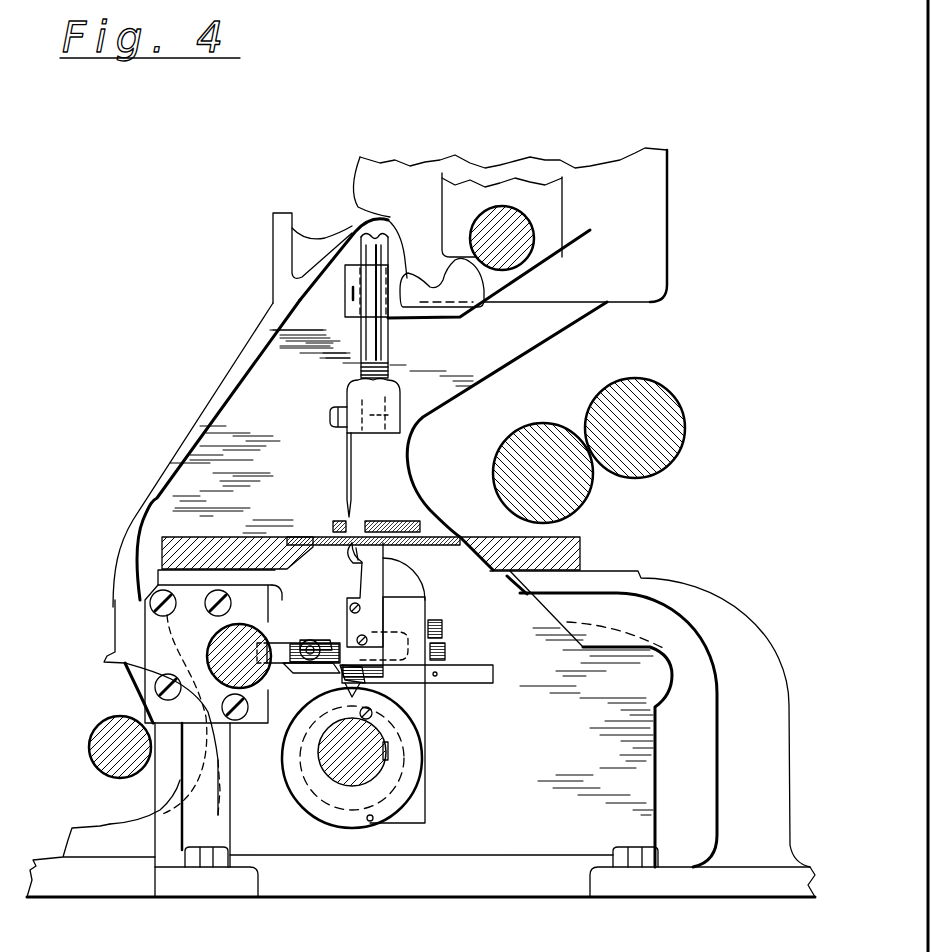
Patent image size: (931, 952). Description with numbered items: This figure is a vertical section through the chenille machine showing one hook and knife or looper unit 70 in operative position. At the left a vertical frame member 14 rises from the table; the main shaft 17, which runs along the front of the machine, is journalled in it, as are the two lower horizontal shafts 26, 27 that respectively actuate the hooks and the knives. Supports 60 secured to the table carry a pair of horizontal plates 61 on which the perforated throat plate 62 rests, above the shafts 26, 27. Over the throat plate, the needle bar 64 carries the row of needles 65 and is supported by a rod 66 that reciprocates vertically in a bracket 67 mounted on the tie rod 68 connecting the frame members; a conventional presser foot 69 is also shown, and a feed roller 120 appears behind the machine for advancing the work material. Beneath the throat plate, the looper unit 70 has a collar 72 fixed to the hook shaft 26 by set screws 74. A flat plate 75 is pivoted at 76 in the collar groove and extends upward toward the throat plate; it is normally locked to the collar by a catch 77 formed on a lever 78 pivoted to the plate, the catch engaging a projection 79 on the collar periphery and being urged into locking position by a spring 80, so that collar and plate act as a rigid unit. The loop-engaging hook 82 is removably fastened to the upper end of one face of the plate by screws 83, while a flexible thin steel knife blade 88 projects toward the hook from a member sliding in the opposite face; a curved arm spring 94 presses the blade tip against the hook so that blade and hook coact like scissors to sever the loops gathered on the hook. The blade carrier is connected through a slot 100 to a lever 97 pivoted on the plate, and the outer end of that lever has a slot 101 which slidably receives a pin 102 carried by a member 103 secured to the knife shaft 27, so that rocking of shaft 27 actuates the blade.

The vertical frame member 14 is at (247, 372).
The main shaft 17 is at (105, 733).
The actuating shaft for the hooks 26 is at (340, 773).
The actuating shaft for the knives 27 is at (232, 642).
The support 60 is at (670, 603).
The horizontal plate 61 is at (162, 551).
The throat plate 62 is at (300, 538).
The needle bar 64 is at (347, 400).
The needle 65 is at (348, 497).
The rod 66 is at (362, 240).
The bracket 67 is at (548, 185).
The tie rod 68 is at (495, 213).
The presser foot 69 is at (378, 525).
The hook and knife unit 70 is at (453, 634).
The collar 72 is at (343, 800).
The set screw 74 is at (400, 755).
The plate 75 is at (412, 703).
The pivot 76 is at (372, 826).
The catch 77 is at (347, 692).
The lever 78 is at (468, 685).
The projection 79 is at (362, 712).
The spring 80 is at (443, 652).
The loop-engaging hook 82 is at (415, 538).
The screw 83 is at (349, 637).
The knife blade 88 is at (350, 576).
The curved arm spring 94 is at (407, 584).
The lever 97 is at (318, 623).
The slot 100 is at (430, 610).
The slot 101 is at (300, 665).
The pin 102 is at (302, 637).
The member 103 is at (278, 693).
The roller 120 is at (597, 407).